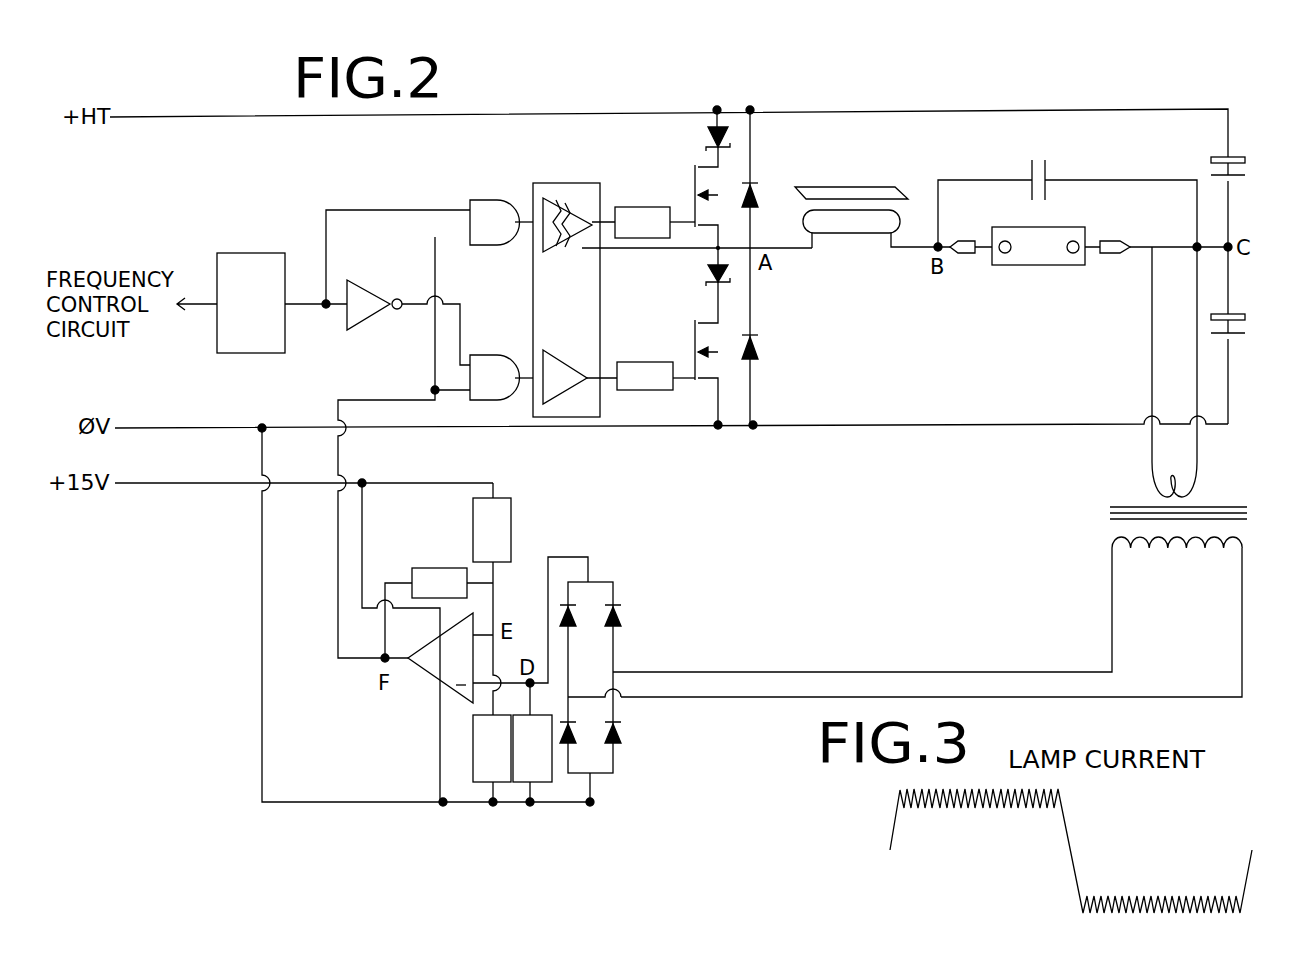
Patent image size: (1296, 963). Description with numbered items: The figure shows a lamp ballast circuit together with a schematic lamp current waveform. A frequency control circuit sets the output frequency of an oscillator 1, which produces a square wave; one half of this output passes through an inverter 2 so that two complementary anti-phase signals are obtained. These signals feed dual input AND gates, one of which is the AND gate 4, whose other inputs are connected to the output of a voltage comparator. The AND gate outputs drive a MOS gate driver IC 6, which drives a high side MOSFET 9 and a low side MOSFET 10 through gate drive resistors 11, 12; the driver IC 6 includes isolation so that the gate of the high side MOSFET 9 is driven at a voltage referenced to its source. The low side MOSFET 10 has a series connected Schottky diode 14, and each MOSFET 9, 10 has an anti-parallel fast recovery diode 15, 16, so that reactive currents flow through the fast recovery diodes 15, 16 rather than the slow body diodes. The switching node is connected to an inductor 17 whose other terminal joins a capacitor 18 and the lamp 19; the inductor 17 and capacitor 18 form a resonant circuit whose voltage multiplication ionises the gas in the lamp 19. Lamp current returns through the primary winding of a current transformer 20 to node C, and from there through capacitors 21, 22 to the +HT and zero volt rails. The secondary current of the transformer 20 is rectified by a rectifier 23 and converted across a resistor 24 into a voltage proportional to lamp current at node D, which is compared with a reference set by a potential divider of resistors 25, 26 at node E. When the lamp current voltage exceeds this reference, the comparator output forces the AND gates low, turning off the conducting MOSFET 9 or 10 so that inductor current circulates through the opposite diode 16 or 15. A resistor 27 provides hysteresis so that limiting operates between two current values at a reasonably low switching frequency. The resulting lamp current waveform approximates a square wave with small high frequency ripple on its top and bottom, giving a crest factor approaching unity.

The oscillator 1 is at (251, 303).
The inverter 2 is at (374, 305).
The dual input AND gate 4 is at (495, 377).
The MOS gate driver IC 6 is at (504, 443).
The high side MOSFET 9 is at (594, 206).
The MOSFET 10 is at (694, 353).
The gate drive resistor 11 is at (642, 222).
The gate drive resistor 12 is at (645, 376).
The Schottky diode 14 is at (701, 273).
The fast recovery diode 15 is at (766, 195).
The fast recovery diode 16 is at (766, 350).
The inductor 17 is at (866, 227).
The capacitor 18 is at (1067, 191).
The lamp 19 is at (877, 196).
The current transformer 20 is at (930, 472).
The capacitor 21 is at (1244, 187).
The capacitor 22 is at (1244, 335).
The rectifier 23 is at (575, 679).
The resistor 24 is at (532, 742).
The resistor 25 is at (492, 533).
The resistor 26 is at (492, 758).
The resistor 27 is at (439, 613).